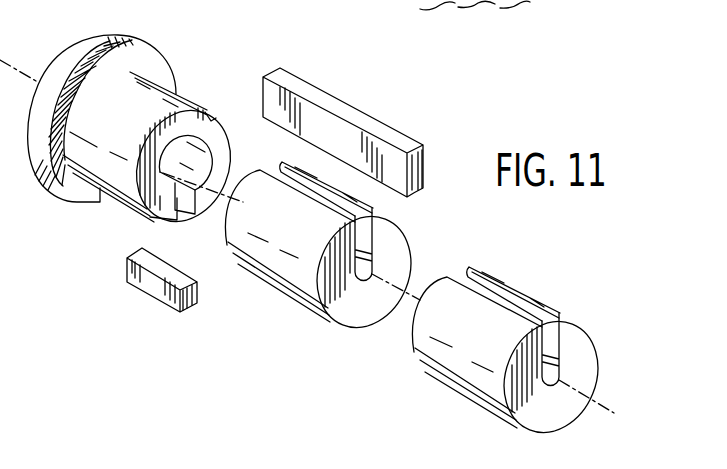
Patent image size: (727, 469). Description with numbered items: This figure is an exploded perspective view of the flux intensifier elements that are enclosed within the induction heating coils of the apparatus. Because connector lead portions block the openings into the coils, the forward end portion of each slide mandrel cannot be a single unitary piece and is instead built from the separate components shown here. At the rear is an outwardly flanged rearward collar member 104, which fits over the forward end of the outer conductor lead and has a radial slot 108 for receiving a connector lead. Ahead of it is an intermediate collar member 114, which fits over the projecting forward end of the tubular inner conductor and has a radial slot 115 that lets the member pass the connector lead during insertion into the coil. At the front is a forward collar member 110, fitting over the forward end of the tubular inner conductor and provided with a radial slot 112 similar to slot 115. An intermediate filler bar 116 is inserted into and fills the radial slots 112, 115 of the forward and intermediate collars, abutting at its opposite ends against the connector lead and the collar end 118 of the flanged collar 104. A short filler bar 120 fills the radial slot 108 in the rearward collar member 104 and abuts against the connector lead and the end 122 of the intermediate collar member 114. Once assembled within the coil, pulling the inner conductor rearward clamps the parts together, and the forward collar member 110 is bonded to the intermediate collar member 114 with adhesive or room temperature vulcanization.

The outwardly flanged rearward collar member 104 is at (152, 55).
The radial slot 108 is at (202, 216).
The forward collar member 110 is at (557, 308).
The radial slot 112 is at (502, 297).
The intermediate collar member 114 is at (300, 290).
The radial slot 115 is at (367, 236).
The intermediate filler bar 116 is at (383, 132).
The collar end 118 is at (213, 124).
The short filler bar 120 is at (153, 288).
The end of intermediate collar member 122 is at (243, 176).